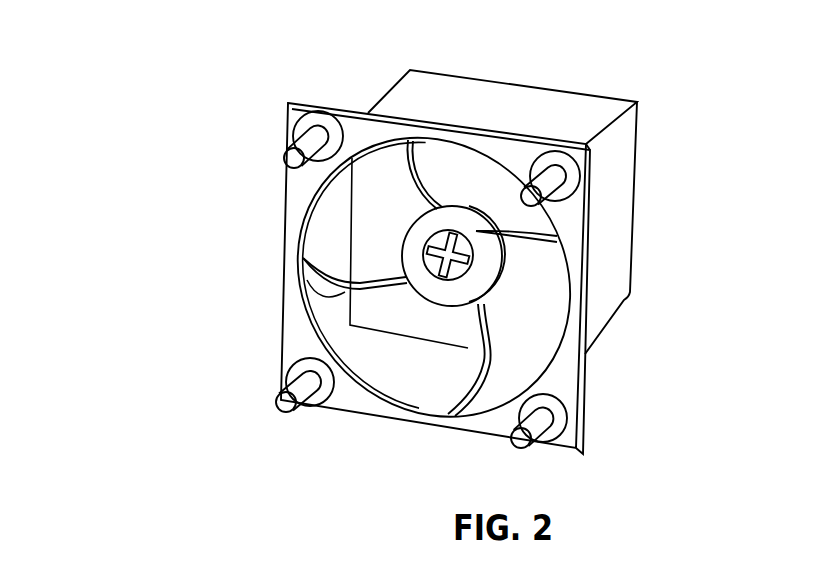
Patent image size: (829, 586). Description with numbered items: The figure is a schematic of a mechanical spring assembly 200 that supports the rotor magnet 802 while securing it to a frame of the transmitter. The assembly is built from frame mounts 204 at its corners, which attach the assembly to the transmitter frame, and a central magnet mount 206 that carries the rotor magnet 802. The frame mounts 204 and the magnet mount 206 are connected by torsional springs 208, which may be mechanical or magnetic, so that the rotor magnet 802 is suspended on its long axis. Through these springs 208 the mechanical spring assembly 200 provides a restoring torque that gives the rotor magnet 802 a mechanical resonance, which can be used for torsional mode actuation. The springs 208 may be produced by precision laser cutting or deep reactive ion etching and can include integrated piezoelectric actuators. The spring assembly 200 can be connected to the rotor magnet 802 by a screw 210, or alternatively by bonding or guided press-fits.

The mechanical spring assembly 200 is at (146, 37).
The rotor magnet 802 is at (613, 143).
The frame mounts 204 is at (312, 130).
The magnet mount 206 is at (482, 257).
The torsional springs 208 is at (403, 197).
The screw 210 is at (462, 275).